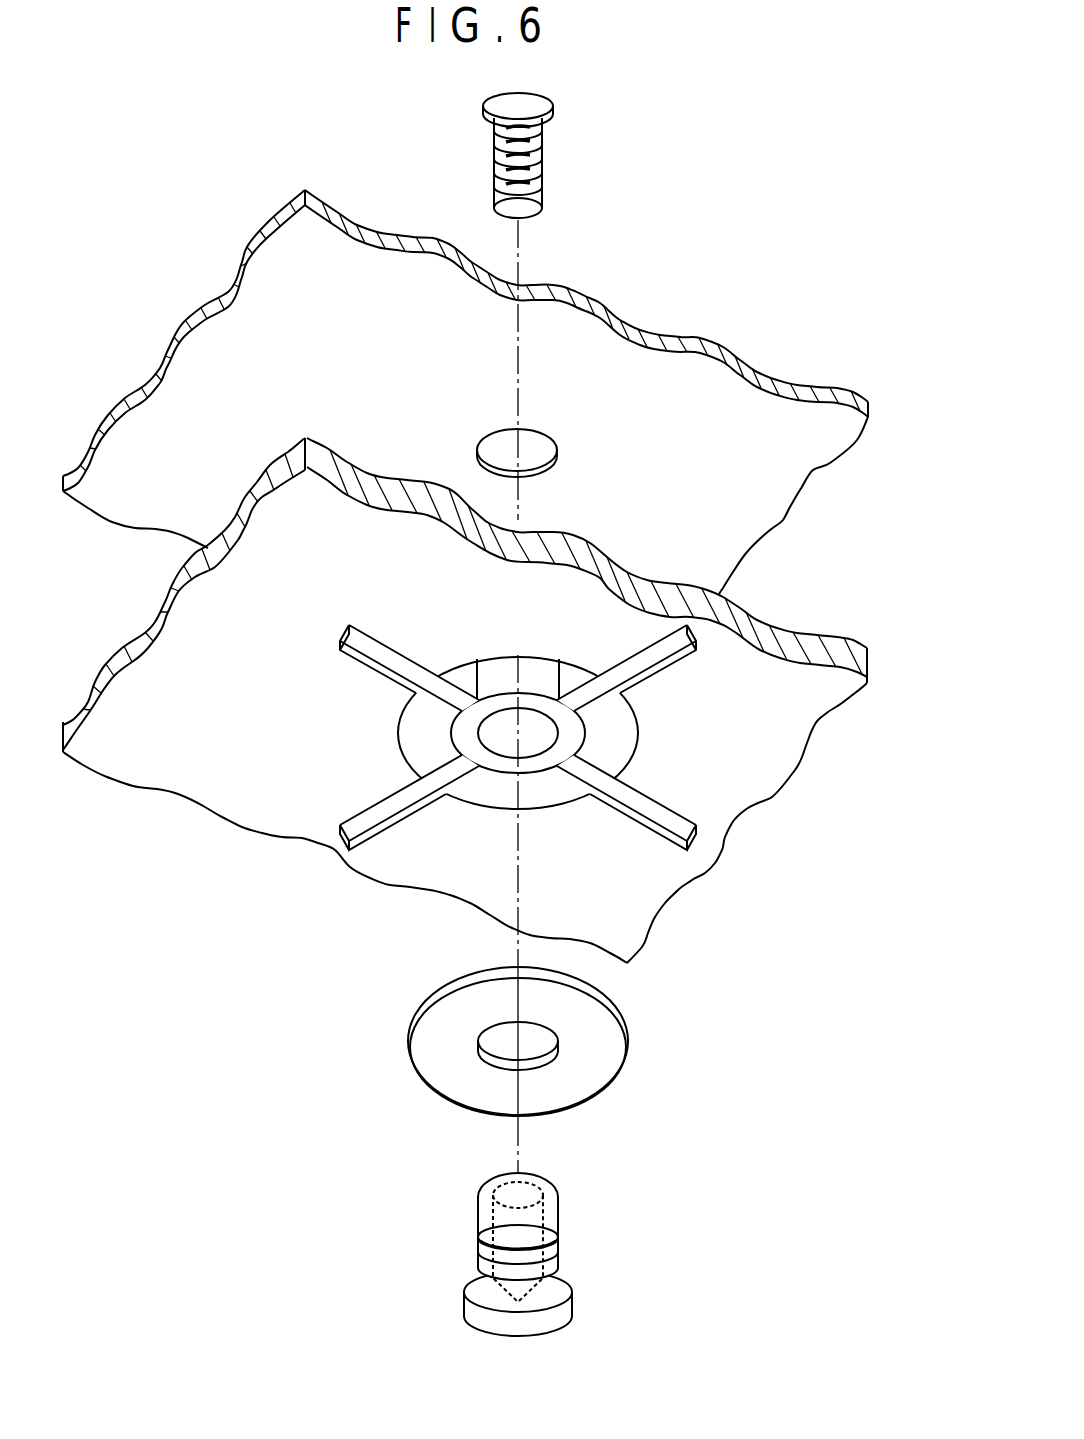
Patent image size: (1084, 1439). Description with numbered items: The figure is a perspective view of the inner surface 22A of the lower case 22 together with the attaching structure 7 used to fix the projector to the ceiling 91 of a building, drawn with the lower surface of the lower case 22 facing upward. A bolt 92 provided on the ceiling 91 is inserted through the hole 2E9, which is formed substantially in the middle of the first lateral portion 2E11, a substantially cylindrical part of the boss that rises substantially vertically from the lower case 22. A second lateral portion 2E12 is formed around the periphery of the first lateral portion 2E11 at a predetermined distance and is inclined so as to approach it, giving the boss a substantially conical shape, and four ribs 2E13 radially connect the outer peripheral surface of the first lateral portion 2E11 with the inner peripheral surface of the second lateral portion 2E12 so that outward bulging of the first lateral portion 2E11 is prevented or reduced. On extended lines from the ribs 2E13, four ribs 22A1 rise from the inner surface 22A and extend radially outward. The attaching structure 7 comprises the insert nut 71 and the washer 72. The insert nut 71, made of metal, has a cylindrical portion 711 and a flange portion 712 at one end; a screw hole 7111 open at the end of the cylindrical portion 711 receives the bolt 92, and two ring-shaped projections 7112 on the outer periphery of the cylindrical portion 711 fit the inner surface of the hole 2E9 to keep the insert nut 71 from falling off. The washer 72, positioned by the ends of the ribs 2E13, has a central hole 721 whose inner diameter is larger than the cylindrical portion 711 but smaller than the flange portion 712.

The bolt 92 is at (540, 157).
The ceiling 91 is at (798, 447).
The lower case 22 is at (867, 660).
The inner surface 22A is at (611, 757).
The rib 22A1 is at (370, 643).
The hole 2E9 is at (500, 753).
The first lateral portion 2E11 is at (520, 658).
The second lateral portion 2E12 is at (618, 727).
The rib 2E13 is at (458, 662).
The attaching structure 7 is at (603, 1151).
The washer 72 is at (560, 1042).
The hole 721 is at (552, 1057).
The insert nut 71 is at (534, 1254).
The cylindrical portion 711 is at (511, 1237).
The flange portion 712 is at (570, 1272).
The screw hole 7111 is at (478, 1207).
The ring-shaped projection 7112 is at (478, 1247).